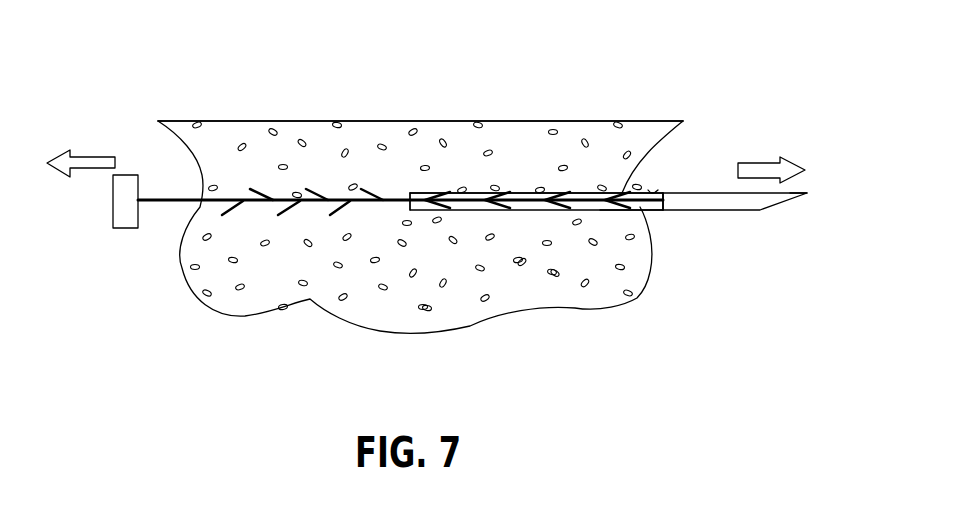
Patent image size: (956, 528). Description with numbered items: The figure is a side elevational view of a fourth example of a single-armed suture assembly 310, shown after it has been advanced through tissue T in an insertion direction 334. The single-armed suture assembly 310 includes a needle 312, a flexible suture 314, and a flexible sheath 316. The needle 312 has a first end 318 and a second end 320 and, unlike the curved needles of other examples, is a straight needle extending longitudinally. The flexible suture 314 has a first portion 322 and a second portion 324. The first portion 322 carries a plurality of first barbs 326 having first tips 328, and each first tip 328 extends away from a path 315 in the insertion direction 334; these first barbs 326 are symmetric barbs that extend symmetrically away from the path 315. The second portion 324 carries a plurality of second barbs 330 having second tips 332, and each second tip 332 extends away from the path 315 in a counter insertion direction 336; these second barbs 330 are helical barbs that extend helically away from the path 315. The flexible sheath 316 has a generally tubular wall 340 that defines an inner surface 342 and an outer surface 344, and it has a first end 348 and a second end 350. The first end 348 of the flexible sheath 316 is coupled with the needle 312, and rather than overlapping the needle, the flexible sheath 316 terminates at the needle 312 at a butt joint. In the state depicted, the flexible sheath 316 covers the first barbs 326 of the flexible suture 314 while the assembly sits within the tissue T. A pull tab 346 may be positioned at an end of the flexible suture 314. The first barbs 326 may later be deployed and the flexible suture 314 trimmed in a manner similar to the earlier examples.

The tissue T is at (212, 143).
The single-armed suture assembly 310 is at (716, 317).
The needle 312 is at (778, 213).
The flexible suture 314 is at (393, 145).
The path 315 is at (170, 204).
The flexible sheath 316 is at (579, 175).
The first end 318 is at (805, 193).
The second end 320 is at (648, 190).
The first portion 322 is at (521, 163).
The second portion 324 is at (303, 165).
The first barbs 326 is at (542, 214).
The first tips 328 is at (563, 212).
The second barbs 330 is at (344, 220).
The second tips 332 is at (226, 218).
The insertion direction 334 is at (757, 166).
The counter insertion direction 336 is at (92, 158).
The tubular wall 340 is at (461, 219).
The inner surface 342 is at (662, 212).
The outer surface 344 is at (622, 190).
The pull tab 346 is at (127, 230).
The first end 348 is at (662, 208).
The second end 350 is at (410, 210).